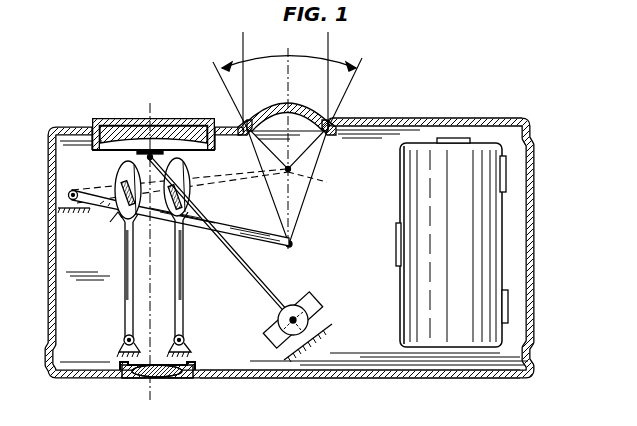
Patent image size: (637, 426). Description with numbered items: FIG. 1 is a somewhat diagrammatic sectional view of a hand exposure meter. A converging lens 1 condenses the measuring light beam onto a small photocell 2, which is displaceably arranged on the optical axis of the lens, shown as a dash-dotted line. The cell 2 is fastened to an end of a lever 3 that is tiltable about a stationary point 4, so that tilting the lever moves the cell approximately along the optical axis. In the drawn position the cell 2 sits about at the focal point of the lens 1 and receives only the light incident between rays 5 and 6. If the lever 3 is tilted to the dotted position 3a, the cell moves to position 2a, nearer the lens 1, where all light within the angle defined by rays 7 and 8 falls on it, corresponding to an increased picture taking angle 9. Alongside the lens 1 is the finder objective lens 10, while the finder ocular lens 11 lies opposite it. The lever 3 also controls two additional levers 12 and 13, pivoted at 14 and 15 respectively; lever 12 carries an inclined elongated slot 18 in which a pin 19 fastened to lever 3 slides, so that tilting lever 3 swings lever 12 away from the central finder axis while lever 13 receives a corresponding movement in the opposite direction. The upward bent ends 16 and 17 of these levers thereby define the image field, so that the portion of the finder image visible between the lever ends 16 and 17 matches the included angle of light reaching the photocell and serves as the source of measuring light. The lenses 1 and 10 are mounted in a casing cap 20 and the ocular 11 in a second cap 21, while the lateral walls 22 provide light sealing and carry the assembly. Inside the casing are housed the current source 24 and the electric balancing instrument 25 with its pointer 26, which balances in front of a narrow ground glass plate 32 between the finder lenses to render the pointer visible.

The converging lens 1 is at (280, 106).
The photocell 2 is at (293, 244).
The photocell position 2a is at (299, 163).
The lever 3 is at (263, 233).
The lever position 3a is at (216, 180).
The stationary point 4 is at (68, 194).
The ray 5 is at (243, 40).
The ray 6 is at (328, 40).
The ray 7 is at (233, 100).
The ray 8 is at (341, 94).
The picture taking angle 9 is at (303, 55).
The finder objective lens 10 is at (120, 119).
The ocular lens 11 is at (146, 378).
The lever 12 is at (124, 266).
The lever 13 is at (182, 283).
The pivot 14 is at (125, 340).
The pivot 15 is at (184, 340).
The upward bent lever end 16 is at (124, 165).
The upward bent lever end 17 is at (174, 161).
The inclined elongated slot 18 is at (150, 220).
The pin 19 is at (122, 217).
The casing cap 20 is at (443, 118).
The second cap 21 is at (402, 374).
The lateral walls 22 is at (48, 254).
The current source 24 is at (428, 208).
The electric balancing instrument 25 is at (312, 321).
The pointer 26 is at (266, 290).
The ground glass plate 32 is at (156, 132).